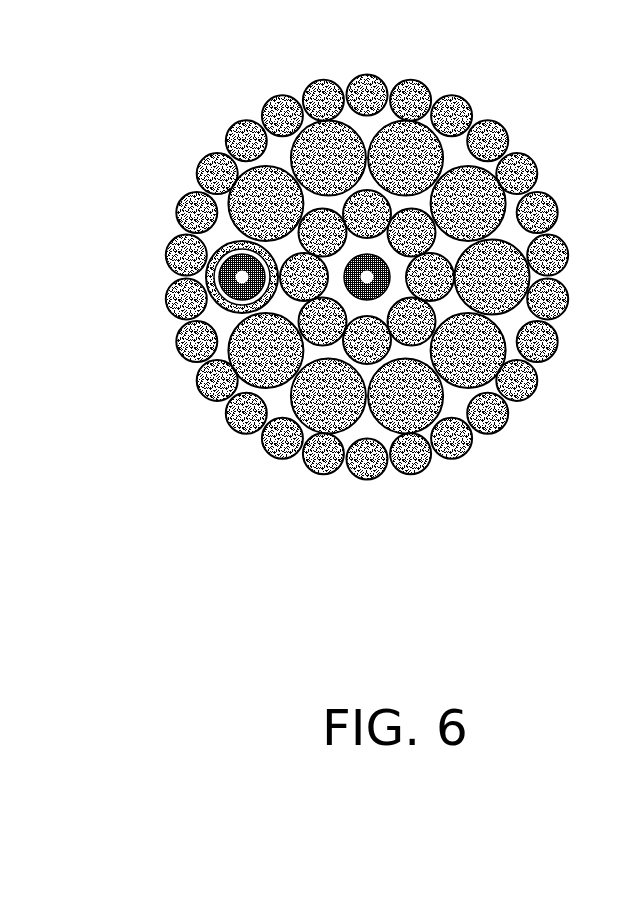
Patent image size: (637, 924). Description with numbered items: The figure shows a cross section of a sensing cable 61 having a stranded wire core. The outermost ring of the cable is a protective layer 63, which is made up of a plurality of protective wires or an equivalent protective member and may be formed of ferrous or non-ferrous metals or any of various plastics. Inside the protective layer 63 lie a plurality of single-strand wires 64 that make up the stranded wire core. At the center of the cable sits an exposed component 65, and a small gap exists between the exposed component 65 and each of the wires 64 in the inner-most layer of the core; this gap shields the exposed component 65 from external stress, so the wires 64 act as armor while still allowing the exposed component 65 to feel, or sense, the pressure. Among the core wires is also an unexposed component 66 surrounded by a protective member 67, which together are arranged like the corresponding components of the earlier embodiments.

The sensing cable 61 is at (295, 283).
The protective layer 63 is at (283, 113).
The single-strand wires 64 is at (307, 402).
The exposed component 65 is at (390, 290).
The unexposed component 66 is at (150, 354).
The protective member 67 is at (222, 310).